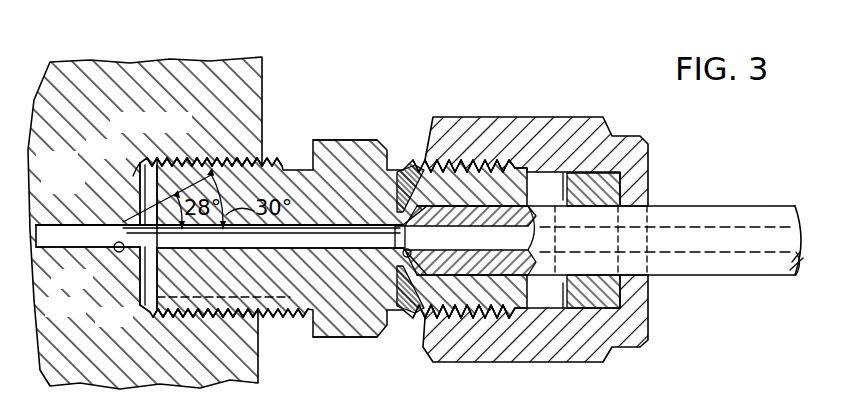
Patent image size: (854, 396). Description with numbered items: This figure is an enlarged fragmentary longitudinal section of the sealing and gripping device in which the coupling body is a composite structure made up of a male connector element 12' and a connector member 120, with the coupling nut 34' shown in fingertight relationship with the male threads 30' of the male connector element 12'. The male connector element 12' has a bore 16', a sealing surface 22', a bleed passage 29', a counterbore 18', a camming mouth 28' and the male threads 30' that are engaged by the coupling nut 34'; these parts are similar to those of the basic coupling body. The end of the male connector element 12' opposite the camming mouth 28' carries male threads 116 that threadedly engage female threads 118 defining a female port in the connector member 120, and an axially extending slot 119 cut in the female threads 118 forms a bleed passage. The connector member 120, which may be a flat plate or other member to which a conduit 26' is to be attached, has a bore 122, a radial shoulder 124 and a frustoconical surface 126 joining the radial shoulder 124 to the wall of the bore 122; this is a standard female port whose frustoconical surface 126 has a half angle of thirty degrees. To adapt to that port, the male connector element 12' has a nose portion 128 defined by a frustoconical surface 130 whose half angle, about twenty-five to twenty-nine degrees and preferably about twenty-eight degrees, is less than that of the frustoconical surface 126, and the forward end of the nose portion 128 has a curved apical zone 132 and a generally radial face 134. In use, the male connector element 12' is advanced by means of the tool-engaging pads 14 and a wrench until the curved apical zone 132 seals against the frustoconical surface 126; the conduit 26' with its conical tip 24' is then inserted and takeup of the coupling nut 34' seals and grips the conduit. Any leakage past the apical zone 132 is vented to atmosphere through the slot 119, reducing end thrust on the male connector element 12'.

The connector member 120 is at (118, 66).
The male threads 116 is at (287, 162).
The axially extending slot 119 is at (232, 290).
The female threads 118 is at (151, 163).
The frustoconical surface 130 is at (143, 163).
The nose portion 128 is at (147, 257).
The radial shoulder 124 is at (135, 172).
The generally radial face 134 is at (108, 200).
The bore 122 is at (110, 205).
The frustoconical surface 126 is at (115, 253).
The curved apical zone 132 is at (147, 257).
The male connector element 12' is at (342, 202).
The tool-engaging pads 14 is at (345, 140).
The bore 16' is at (280, 269).
The male threads 30' is at (461, 128).
The camming mouth 28' is at (461, 297).
The coupling nut 34' is at (535, 223).
The conduit 26' is at (610, 218).
The counterbore 18' is at (470, 226).
The bleed passage 29' is at (386, 239).
The conical tip 24' is at (390, 225).
The sealing surface 22' is at (377, 270).